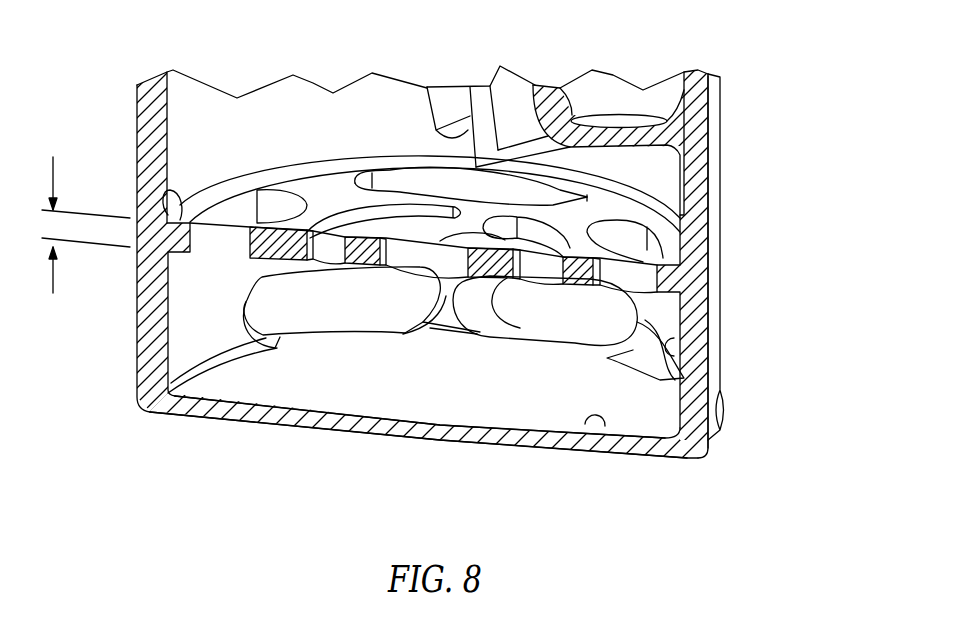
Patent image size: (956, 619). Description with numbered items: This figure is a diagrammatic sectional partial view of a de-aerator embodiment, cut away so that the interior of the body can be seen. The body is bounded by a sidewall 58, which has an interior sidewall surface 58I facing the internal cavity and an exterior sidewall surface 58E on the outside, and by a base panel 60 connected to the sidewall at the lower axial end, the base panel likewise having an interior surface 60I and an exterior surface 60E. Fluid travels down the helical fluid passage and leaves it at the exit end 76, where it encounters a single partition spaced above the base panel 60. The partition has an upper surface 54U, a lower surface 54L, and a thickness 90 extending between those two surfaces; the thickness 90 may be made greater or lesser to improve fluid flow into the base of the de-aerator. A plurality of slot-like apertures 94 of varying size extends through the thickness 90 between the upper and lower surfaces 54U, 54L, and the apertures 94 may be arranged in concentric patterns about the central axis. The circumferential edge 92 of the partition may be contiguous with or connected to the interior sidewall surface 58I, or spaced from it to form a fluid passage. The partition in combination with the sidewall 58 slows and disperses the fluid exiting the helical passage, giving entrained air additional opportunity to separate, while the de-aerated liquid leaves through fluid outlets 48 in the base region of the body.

The fluid outlet 48 is at (342, 313).
The upper surface 54U is at (317, 185).
The lower surface 54L is at (307, 259).
The sidewall 58 is at (422, 264).
The exterior sidewall surface 58E is at (720, 285).
The interior sidewall surface 58I is at (680, 354).
The base panel 60 is at (429, 425).
The exterior base panel surface 60E is at (530, 447).
The interior base panel surface 60I is at (602, 427).
The exit end 76 is at (442, 130).
The thickness 90 is at (52, 275).
The circumferential edge 92 is at (170, 210).
The aperture 94 is at (390, 178).